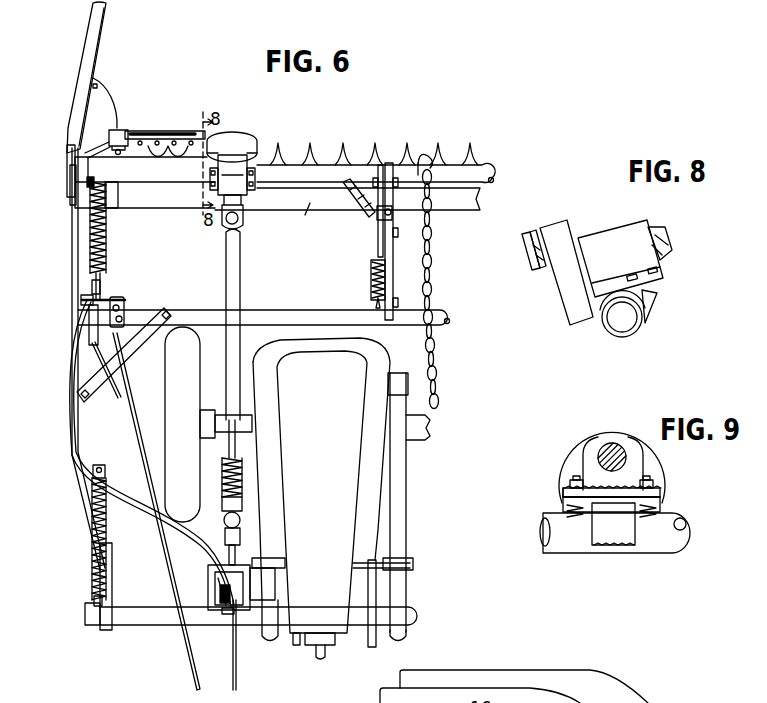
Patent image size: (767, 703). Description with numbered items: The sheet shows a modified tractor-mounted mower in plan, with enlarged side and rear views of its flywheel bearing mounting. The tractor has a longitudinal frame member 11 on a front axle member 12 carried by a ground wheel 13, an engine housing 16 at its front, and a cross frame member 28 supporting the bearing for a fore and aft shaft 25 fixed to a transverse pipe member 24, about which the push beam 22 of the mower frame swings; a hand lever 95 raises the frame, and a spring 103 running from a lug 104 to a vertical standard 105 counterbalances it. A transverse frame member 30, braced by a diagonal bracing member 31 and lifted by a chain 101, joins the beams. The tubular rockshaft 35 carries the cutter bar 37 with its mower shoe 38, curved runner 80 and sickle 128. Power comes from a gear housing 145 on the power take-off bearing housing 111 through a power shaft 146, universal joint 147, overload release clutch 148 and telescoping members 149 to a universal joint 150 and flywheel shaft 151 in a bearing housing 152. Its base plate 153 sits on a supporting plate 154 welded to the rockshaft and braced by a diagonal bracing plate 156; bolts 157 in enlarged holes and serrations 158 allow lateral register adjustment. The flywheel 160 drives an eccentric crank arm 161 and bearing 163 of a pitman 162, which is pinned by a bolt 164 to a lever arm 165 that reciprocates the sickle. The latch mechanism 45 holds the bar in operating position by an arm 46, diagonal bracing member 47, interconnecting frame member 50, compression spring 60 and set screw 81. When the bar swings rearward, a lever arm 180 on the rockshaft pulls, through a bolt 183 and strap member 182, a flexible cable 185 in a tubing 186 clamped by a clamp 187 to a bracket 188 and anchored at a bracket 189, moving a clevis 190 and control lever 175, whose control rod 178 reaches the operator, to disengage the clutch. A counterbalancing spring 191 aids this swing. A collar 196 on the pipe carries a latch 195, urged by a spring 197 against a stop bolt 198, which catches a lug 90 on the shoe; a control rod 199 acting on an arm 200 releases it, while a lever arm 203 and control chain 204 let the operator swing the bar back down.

In FIG. 6, the curved runner 80 is at (100, 37).
In FIG. 6, the mower shoe 38 is at (104, 101).
In FIG. 6, the bolt 164 is at (119, 130).
In FIG. 6, the lever arm 165 is at (105, 141).
In FIG. 6, the pitman 162 is at (168, 131).
In FIG. 8, the pitman 162 is at (535, 265).
In FIG. 6, the bolt 183 is at (80, 178).
In FIG. 6, the lever arm 180 is at (88, 185).
In FIG. 6, the strap member 182 is at (90, 222).
In FIG. 6, the lug 90 is at (112, 208).
In FIG. 6, the rockshaft 35 is at (485, 177).
In FIG. 8, the rockshaft 35 is at (620, 337).
In FIG. 9, the rockshaft 35 is at (655, 543).
In FIG. 6, the sickle 128 is at (325, 146).
In FIG. 6, the flywheel 160 is at (246, 140).
In FIG. 8, the flywheel 160 is at (552, 230).
In FIG. 9, the flywheel 160 is at (562, 483).
In FIG. 6, the bearing housing 152 is at (232, 178).
In FIG. 8, the bearing housing 152 is at (610, 238).
In FIG. 9, the bearing housing 152 is at (596, 445).
In FIG. 6, the bolts 157 is at (258, 180).
In FIG. 8, the bolts 157 is at (660, 270).
In FIG. 9, the bolts 157 is at (650, 482).
In FIG. 6, the base plate 153 is at (253, 170).
In FIG. 8, the base plate 153 is at (640, 280).
In FIG. 9, the base plate 153 is at (660, 492).
In FIG. 6, the flywheel shaft 151 is at (232, 200).
In FIG. 8, the flywheel shaft 151 is at (665, 237).
In FIG. 9, the flywheel shaft 151 is at (617, 452).
In FIG. 6, the universal joint 150 is at (242, 222).
In FIG. 6, the cutter bar 37 is at (311, 222).
In FIG. 6, the diagonal bracing member 47 is at (362, 210).
In FIG. 6, the arm 46 is at (378, 237).
In FIG. 6, the interconnecting frame member 50 is at (391, 286).
In FIG. 6, the set screw 81 is at (389, 220).
In FIG. 6, the compression spring 60 is at (374, 283).
In FIG. 6, the latch mechanism 45 is at (364, 263).
In FIG. 6, the control chain 204 is at (434, 300).
In FIG. 6, the lever arm 203 is at (418, 165).
In FIG. 6, the transverse frame member 30 is at (268, 312).
In FIG. 6, the frame beam 22 is at (80, 455).
In FIG. 6, the counterbalancing spring 191 is at (108, 250).
In FIG. 6, the flexible cable 185 is at (86, 292).
In FIG. 6, the clamp 187 is at (82, 302).
In FIG. 6, the bracket 188 is at (88, 309).
In FIG. 6, the collar 196 is at (125, 310).
In FIG. 6, the latch 195 is at (121, 300).
In FIG. 6, the spring 197 is at (111, 298).
In FIG. 6, the stop bolt 198 is at (142, 318).
In FIG. 6, the chain 101 is at (106, 414).
In FIG. 6, the arm 200 is at (112, 352).
In FIG. 6, the diagonal bracing member 31 is at (122, 380).
In FIG. 6, the control rod 199 is at (160, 528).
In FIG. 6, the flexible incompressible tubing 186 is at (70, 377).
In FIG. 6, the lug 104 is at (99, 472).
In FIG. 6, the spring 103 is at (92, 570).
In FIG. 6, the vertical standard 105 is at (92, 626).
In FIG. 6, the transverse pipe member 24 is at (150, 626).
In FIG. 6, the ground wheel 13 is at (188, 372).
In FIG. 6, the telescoping members 149 is at (212, 428).
In FIG. 6, the front axle member 12 is at (245, 425).
In FIG. 6, the overload release clutch 148 is at (222, 480).
In FIG. 6, the universal joint 147 is at (223, 520).
In FIG. 6, the power shaft 146 is at (229, 555).
In FIG. 6, the gear housing 145 is at (215, 575).
In FIG. 6, the bracket 189 is at (216, 583).
In FIG. 6, the clevis 190 is at (219, 595).
In FIG. 6, the control lever 175 is at (225, 614).
In FIG. 6, the control rod 178 is at (238, 680).
In FIG. 6, the power take-off bearing housing 111 is at (268, 588).
In FIG. 6, the engine housing 16 is at (325, 476).
In FIG. 6, the frame member 11 is at (400, 639).
In FIG. 6, the shaft 25 is at (323, 653).
In FIG. 6, the cross frame member 28 is at (395, 580).
In FIG. 6, the hand lever 95 is at (766, 678).
In FIG. 8, the supporting plate 154 is at (657, 285).
In FIG. 9, the supporting plate 154 is at (662, 500).
In FIG. 8, the diagonal bracing plate 156 is at (650, 305).
In FIG. 9, the diagonal bracing plate 156 is at (605, 528).
In FIG. 8, the bearing 163 is at (527, 255).
In FIG. 8, the eccentric crank arm 161 is at (546, 264).
In FIG. 9, the serrations 158 is at (594, 479).